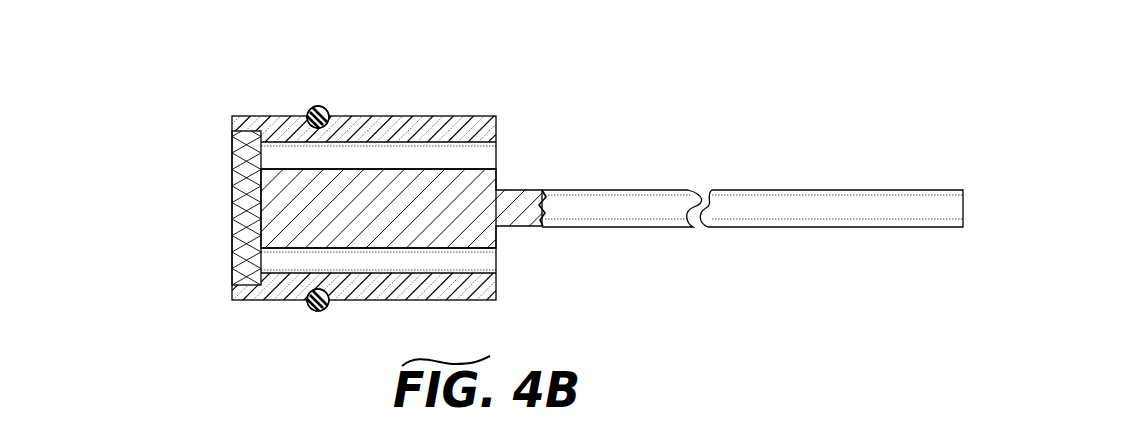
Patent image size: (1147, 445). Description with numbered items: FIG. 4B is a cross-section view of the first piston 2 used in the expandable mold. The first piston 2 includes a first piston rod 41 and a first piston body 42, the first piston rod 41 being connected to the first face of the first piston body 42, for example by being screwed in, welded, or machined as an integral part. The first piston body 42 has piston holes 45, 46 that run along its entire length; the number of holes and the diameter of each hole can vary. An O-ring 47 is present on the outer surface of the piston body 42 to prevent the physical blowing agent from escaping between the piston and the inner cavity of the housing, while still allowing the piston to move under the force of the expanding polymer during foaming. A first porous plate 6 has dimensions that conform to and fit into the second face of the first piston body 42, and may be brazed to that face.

The first piston 2 is at (672, 113).
The first porous plate 6 is at (246, 207).
The first piston rod 41 is at (853, 205).
The first piston body 42 is at (420, 116).
The piston hole 45 is at (481, 155).
The piston hole 46 is at (481, 263).
The O-ring 47 is at (320, 105).